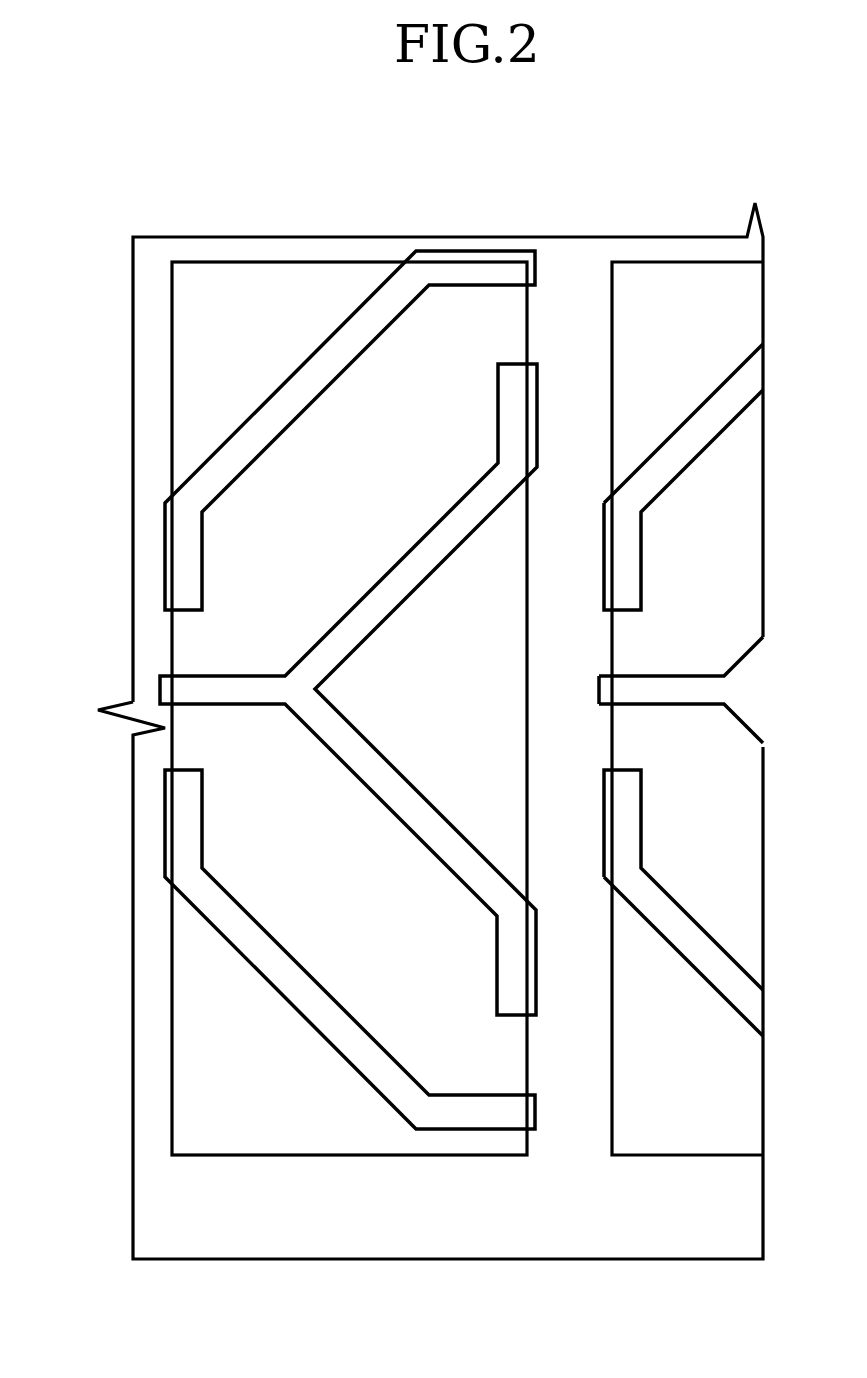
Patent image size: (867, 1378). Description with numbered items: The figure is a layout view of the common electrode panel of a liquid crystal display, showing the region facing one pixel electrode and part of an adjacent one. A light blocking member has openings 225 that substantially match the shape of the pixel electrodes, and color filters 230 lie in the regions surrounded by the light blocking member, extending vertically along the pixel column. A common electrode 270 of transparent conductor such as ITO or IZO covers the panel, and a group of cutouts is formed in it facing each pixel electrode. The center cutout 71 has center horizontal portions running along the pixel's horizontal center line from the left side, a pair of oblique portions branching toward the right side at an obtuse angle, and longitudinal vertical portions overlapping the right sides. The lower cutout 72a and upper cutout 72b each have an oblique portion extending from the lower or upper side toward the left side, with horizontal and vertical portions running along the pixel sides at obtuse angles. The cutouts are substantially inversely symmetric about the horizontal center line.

The color filter 230 is at (255, 1259).
The opening 225 is at (360, 1155).
The common electrode 270 is at (483, 1260).
The center cutout 71 is at (350, 769).
The upper cutout 72b is at (340, 374).
The lower cutout 72a is at (330, 995).